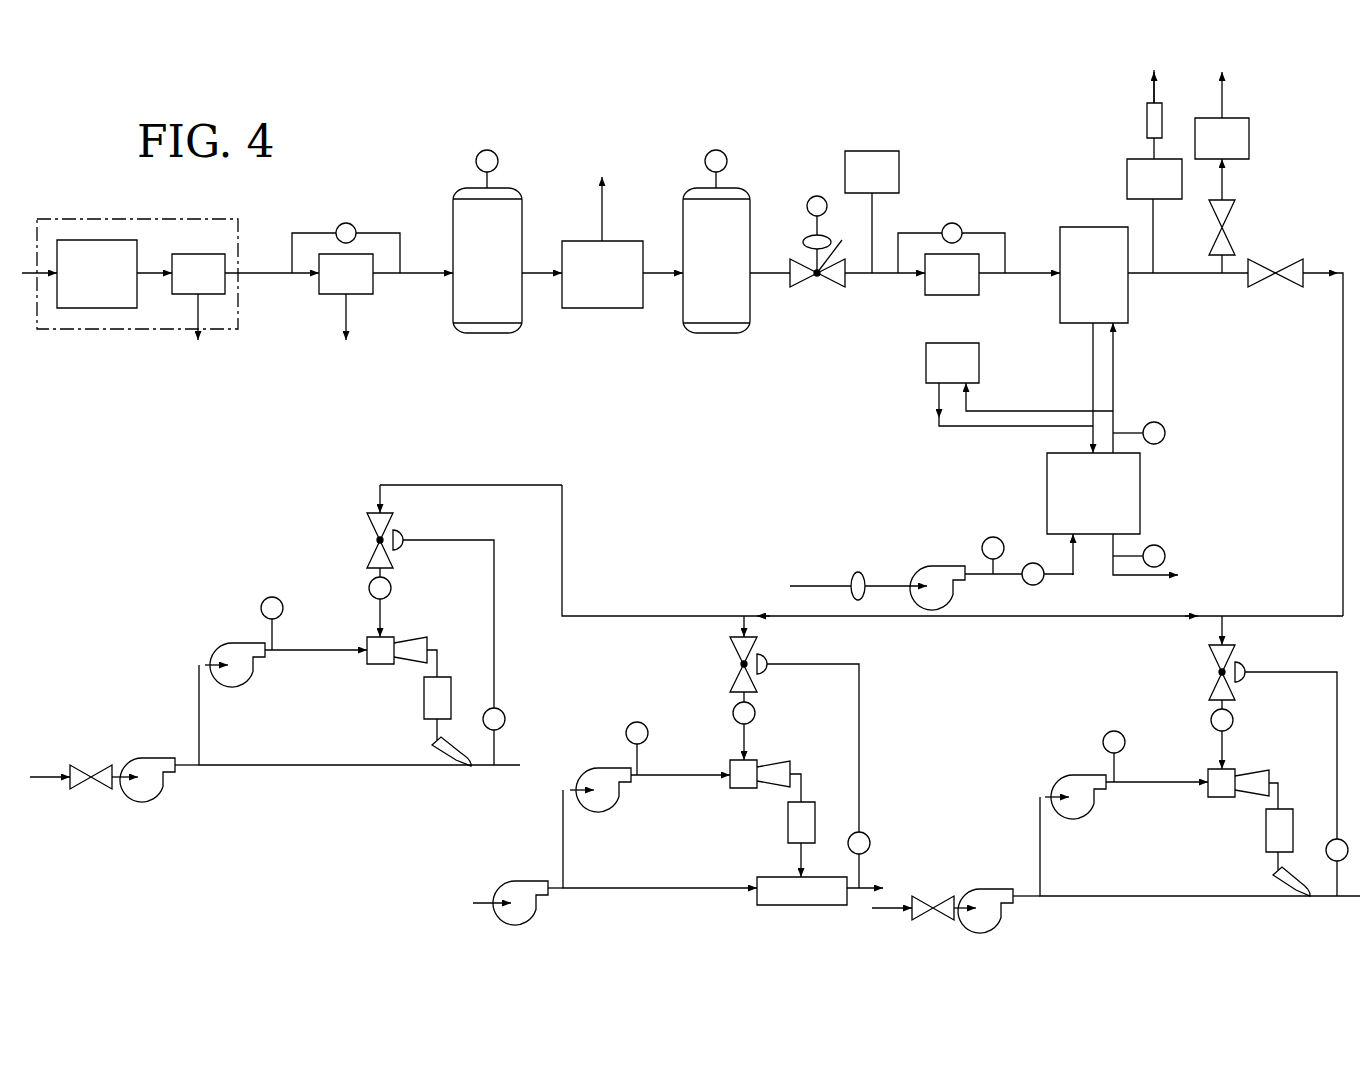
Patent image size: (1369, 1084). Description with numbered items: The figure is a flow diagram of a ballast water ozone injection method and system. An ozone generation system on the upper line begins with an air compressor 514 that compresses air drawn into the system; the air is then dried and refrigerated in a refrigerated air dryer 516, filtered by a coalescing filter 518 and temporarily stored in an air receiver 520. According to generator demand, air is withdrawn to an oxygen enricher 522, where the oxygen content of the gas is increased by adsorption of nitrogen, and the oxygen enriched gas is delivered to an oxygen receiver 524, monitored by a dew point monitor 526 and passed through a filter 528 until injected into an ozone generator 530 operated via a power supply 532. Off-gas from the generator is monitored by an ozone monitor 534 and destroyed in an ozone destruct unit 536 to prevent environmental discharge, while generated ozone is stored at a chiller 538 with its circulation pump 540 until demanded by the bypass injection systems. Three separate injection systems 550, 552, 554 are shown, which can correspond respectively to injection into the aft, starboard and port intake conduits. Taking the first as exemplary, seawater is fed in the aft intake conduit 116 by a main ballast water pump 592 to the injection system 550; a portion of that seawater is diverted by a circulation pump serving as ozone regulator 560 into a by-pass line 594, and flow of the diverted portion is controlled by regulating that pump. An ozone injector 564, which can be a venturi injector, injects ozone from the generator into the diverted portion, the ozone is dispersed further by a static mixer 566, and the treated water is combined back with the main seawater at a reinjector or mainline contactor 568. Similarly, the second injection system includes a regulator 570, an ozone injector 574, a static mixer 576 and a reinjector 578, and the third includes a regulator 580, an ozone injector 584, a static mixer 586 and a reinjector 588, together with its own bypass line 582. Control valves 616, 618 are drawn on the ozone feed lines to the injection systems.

The air compressor 514 is at (115, 285).
The refrigerated air dryer 516 is at (216, 285).
The coalescing filter 518 is at (364, 285).
The air receiver 520 is at (505, 270).
The O2 enricher 522 is at (620, 285).
The O2 receiver 524 is at (734, 270).
The dew point monitor 526 is at (890, 182).
The filter 528 is at (970, 285).
The ozone generator 530 is at (1112, 285).
The power supply 532 is at (970, 374).
The ozone monitor 534 is at (1172, 190).
The ozone destruct unit 536 is at (1240, 149).
The chiller 538 is at (1112, 500).
The circulation pump 540 is at (933, 567).
The injection system 550 is at (152, 680).
The injection system 552 is at (542, 825).
The injection system 554 is at (992, 812).
The ozone regulator 560 is at (220, 652).
The ozone injector 564 is at (394, 637).
The static mixer 566 is at (443, 693).
The reinjector 568 is at (450, 752).
The regulator 570 is at (595, 770).
The ozone injector 574 is at (757, 763).
The static mixer 576 is at (788, 828).
The reinjector 578 is at (757, 900).
The regulator 580 is at (1065, 780).
The recirculation line 582 is at (1040, 855).
The ozone injector 584 is at (1235, 770).
The static mixer 586 is at (1285, 828).
The reinjector 588 is at (1280, 880).
The main ballast water pump 592 is at (142, 795).
The by-pass line 594 is at (199, 725).
The aft intake conduit 116 is at (45, 785).
The control valve 616 is at (383, 519).
The control valve 618 is at (750, 645).